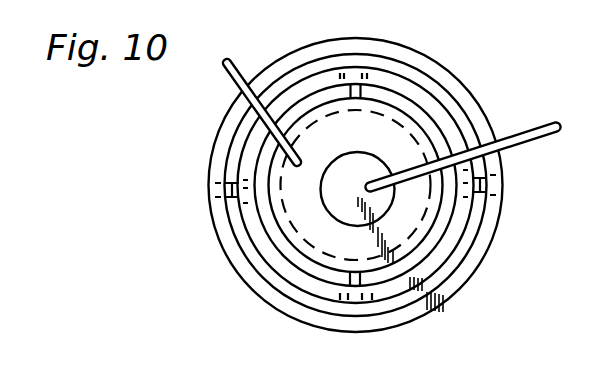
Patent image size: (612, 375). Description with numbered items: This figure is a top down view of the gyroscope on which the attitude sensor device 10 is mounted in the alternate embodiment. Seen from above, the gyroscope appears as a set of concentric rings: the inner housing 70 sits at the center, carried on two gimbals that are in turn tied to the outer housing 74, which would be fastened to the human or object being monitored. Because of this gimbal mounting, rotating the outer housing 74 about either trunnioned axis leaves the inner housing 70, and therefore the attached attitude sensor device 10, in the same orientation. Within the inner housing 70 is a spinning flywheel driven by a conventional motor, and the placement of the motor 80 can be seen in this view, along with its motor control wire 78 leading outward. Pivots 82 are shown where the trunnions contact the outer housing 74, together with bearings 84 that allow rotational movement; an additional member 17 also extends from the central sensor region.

The attitude sensor device 10 is at (337, 203).
The rod 17 is at (549, 121).
The inner housing 70 is at (410, 113).
The outer housing 74 is at (480, 266).
The motor control wire 78 is at (225, 83).
The motor 80 is at (378, 262).
The pivots 82 is at (492, 178).
The bearings 84 is at (470, 214).